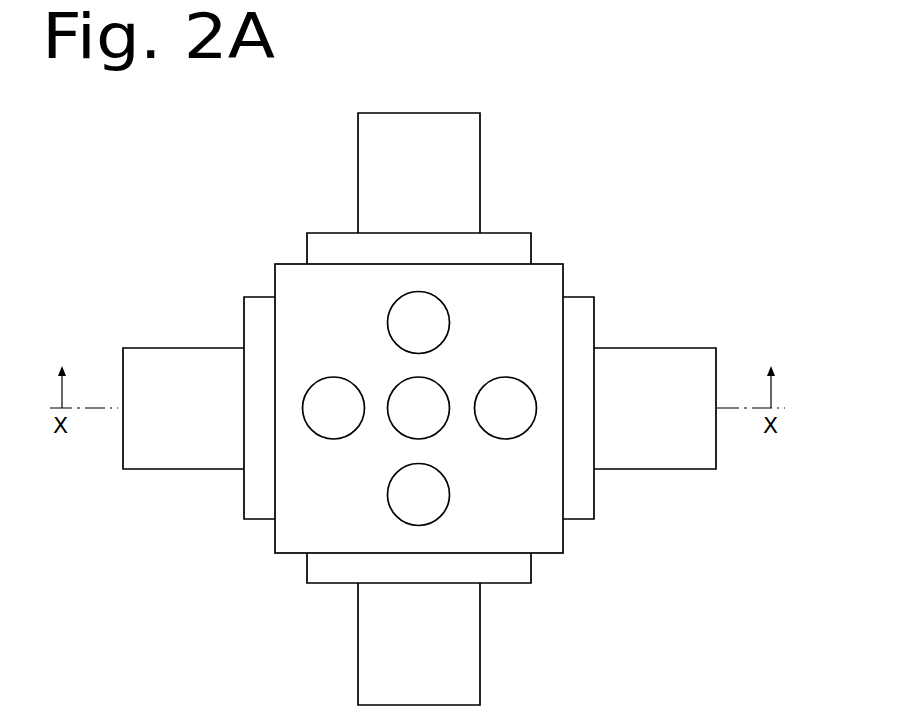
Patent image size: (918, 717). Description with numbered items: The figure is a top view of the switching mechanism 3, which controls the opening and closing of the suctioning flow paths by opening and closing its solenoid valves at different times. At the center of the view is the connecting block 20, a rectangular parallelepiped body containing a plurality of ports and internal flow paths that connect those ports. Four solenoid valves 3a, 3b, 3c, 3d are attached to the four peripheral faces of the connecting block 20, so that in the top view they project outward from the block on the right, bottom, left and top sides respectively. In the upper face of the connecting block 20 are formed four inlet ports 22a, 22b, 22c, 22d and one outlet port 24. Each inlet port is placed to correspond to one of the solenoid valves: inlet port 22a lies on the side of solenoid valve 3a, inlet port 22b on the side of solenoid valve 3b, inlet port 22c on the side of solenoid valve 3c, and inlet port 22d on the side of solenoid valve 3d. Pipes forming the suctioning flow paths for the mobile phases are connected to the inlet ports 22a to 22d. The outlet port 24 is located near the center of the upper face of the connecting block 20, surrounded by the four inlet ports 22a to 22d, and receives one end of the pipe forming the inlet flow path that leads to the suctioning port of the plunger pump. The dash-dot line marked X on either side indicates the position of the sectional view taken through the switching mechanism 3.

The switching mechanism 3 is at (441, 399).
The solenoid valve 3a is at (697, 367).
The solenoid valve 3b is at (472, 658).
The solenoid valve 3c is at (151, 367).
The solenoid valve 3d is at (463, 137).
The connecting block 20 is at (548, 280).
The inlet port 22a is at (522, 423).
The inlet port 22b is at (408, 502).
The inlet port 22c is at (328, 416).
The inlet port 22d is at (407, 308).
The outlet port 24 is at (432, 392).